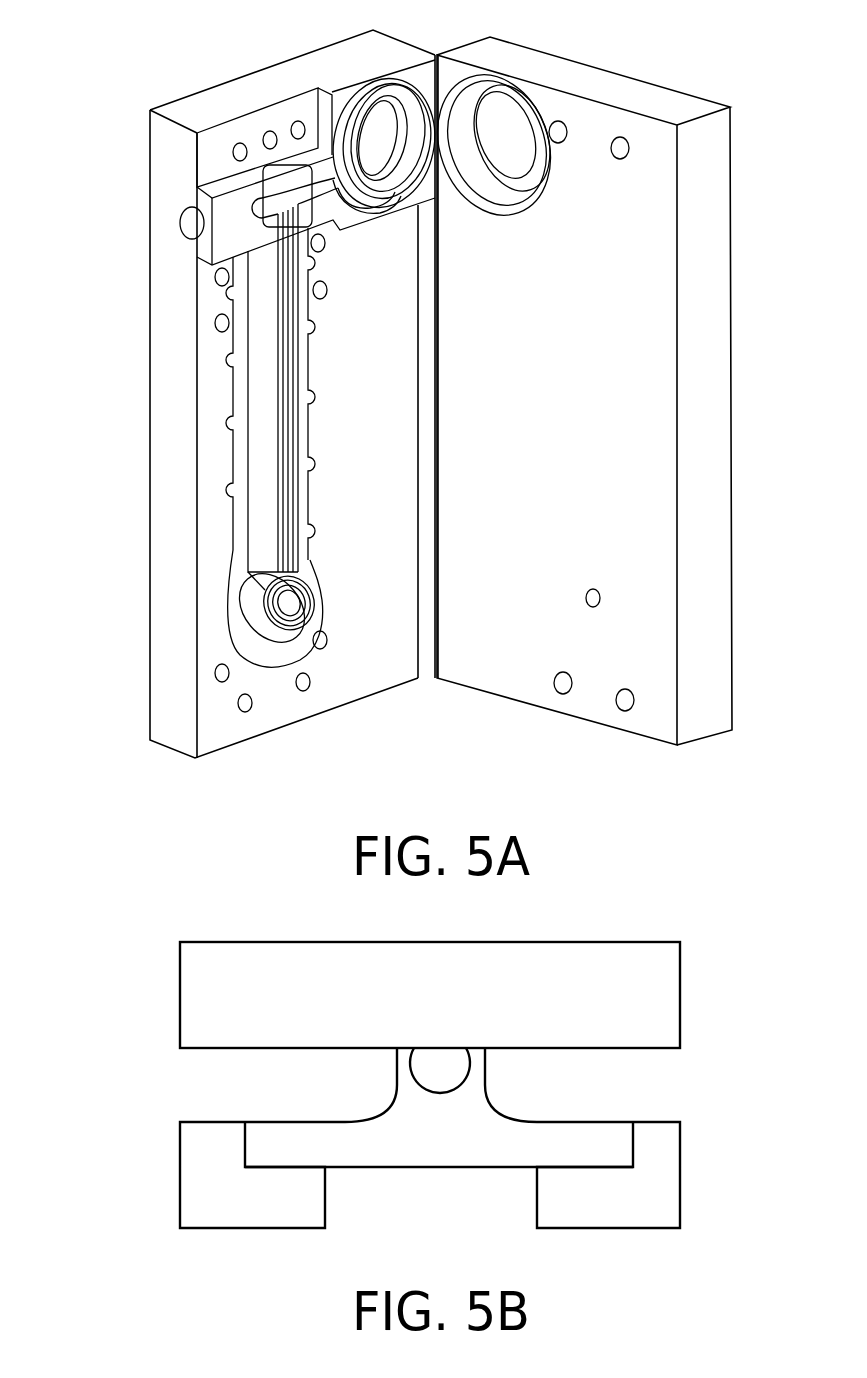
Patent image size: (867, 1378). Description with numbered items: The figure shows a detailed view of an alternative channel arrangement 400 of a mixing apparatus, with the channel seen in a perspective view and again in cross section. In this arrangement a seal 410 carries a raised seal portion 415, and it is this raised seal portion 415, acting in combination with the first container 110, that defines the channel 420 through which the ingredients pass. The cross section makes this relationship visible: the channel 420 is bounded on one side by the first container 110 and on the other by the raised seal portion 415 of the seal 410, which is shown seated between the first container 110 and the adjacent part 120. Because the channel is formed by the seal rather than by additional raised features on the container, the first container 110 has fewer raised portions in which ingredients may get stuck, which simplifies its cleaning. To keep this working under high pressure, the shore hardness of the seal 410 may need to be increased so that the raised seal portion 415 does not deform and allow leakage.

In FIG. 5A, the alternative channel arrangement 400 is at (127, 62).
In FIG. 5A, the first container 110 is at (720, 345).
In FIG. 5B, the first container 110 is at (665, 995).
In FIG. 5A, the second housing block 120 is at (207, 157).
In FIG. 5B, the second housing block 120 is at (660, 1196).
In FIG. 5A, the seal 410 is at (228, 607).
In FIG. 5B, the seal 410 is at (615, 1137).
In FIG. 5A, the raised seal portion 415 is at (272, 390).
In FIG. 5B, the raised seal portion 415 is at (400, 1097).
In FIG. 5A, the channel 420 is at (300, 458).
In FIG. 5B, the channel 420 is at (420, 1062).